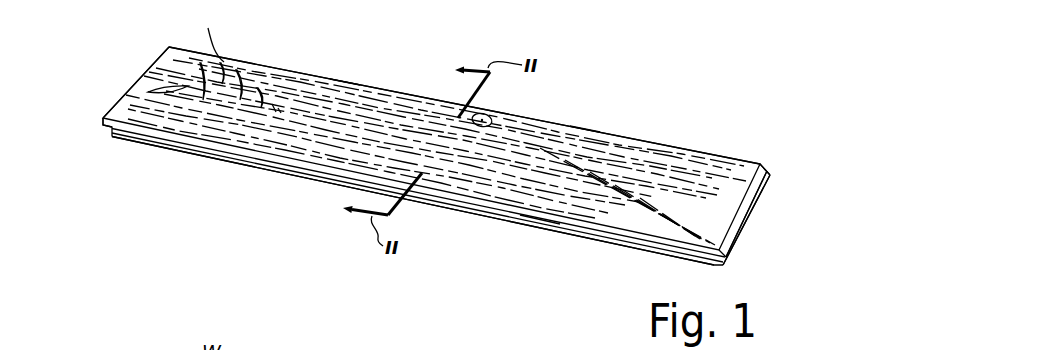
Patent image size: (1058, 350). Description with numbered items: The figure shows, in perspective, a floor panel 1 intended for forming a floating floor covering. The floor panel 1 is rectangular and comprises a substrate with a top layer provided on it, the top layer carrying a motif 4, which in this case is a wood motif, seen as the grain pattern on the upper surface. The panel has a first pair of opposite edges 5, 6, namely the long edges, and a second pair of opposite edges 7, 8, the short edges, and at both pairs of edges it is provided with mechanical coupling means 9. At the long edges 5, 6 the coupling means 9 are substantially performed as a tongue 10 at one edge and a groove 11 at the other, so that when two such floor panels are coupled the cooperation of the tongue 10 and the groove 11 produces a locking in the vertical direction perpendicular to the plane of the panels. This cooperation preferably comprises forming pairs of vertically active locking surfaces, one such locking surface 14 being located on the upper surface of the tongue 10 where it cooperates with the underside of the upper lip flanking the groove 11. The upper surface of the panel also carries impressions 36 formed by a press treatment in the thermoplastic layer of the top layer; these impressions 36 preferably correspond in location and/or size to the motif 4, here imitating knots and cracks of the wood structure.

The floor panel 1 is at (665, 124).
The motif 4 is at (535, 150).
The first edge of the first pair of opposite edges 5 is at (415, 93).
The second edge of the first pair of opposite edges 6 is at (615, 246).
The first edge of the second pair of opposite edges 7 is at (154, 63).
The second edge of the second pair of opposite edges 8 is at (765, 176).
The mechanical coupling means 9 is at (586, 128).
The tongue 10 is at (336, 78).
The groove 11 is at (733, 233).
The vertically active locking surface 14 is at (309, 342).
The impressions 36 is at (278, 90).